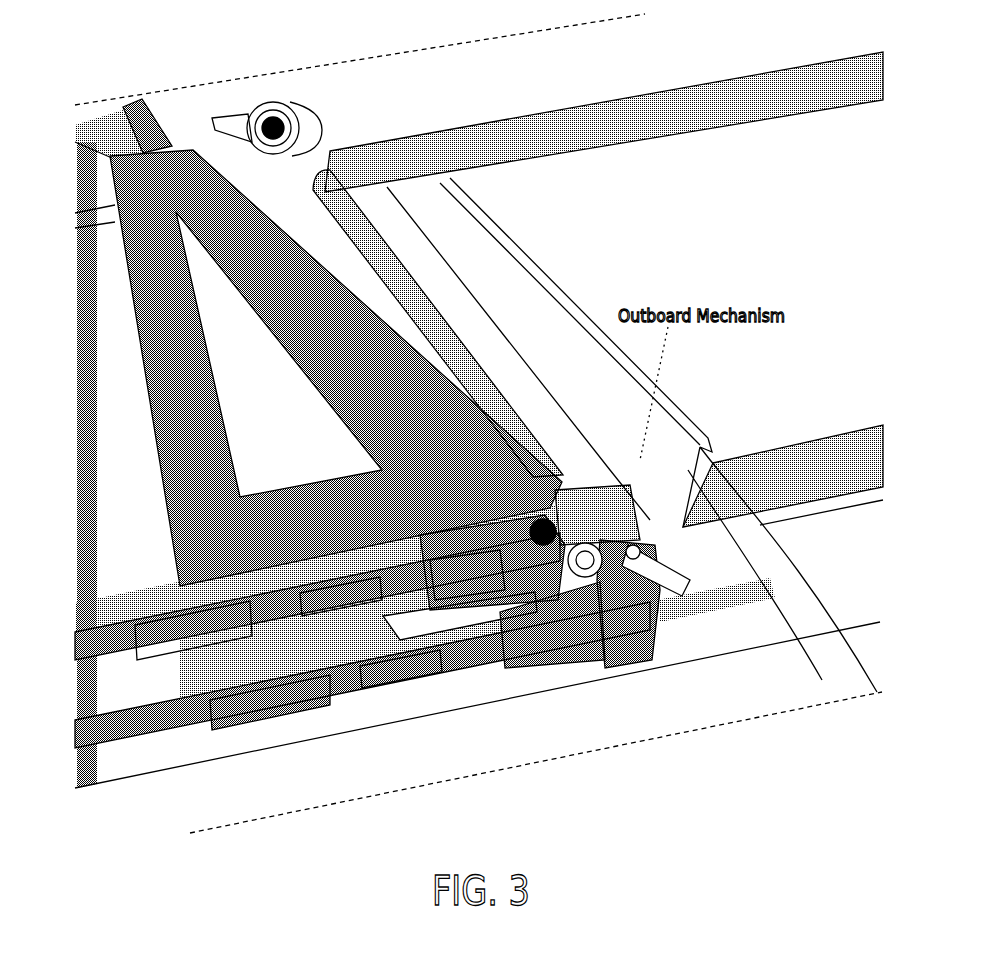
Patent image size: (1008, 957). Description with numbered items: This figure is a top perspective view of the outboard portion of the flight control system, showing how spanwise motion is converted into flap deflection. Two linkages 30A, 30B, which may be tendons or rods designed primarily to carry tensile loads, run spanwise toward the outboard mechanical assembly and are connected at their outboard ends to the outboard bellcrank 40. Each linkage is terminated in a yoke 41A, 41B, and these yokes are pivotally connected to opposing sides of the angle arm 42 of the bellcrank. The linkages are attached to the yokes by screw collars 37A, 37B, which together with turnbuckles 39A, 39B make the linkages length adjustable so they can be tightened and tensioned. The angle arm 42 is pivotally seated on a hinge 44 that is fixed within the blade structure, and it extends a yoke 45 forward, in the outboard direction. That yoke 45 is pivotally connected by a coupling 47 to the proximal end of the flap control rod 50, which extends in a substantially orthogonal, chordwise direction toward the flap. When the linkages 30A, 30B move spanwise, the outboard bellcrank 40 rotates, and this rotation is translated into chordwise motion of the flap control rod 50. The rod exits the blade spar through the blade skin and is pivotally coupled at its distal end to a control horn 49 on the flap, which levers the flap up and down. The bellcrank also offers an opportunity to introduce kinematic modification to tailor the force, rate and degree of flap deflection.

The linkage 30A is at (90, 628).
The linkage 30B is at (148, 732).
The screw collar 37A is at (198, 645).
The screw collar 37B is at (277, 715).
The turnbuckle 39A is at (338, 612).
The turnbuckle 39B is at (402, 680).
The outboard bellcrank 40 is at (640, 674).
The yoke 41A is at (482, 587).
The yoke 41B is at (507, 600).
The angle arm 42 is at (540, 603).
The hinge 44 is at (592, 565).
The yoke 45 is at (655, 558).
The coupling 47 is at (650, 590).
The control horn 49 is at (250, 122).
The flap control rod 50 is at (443, 310).